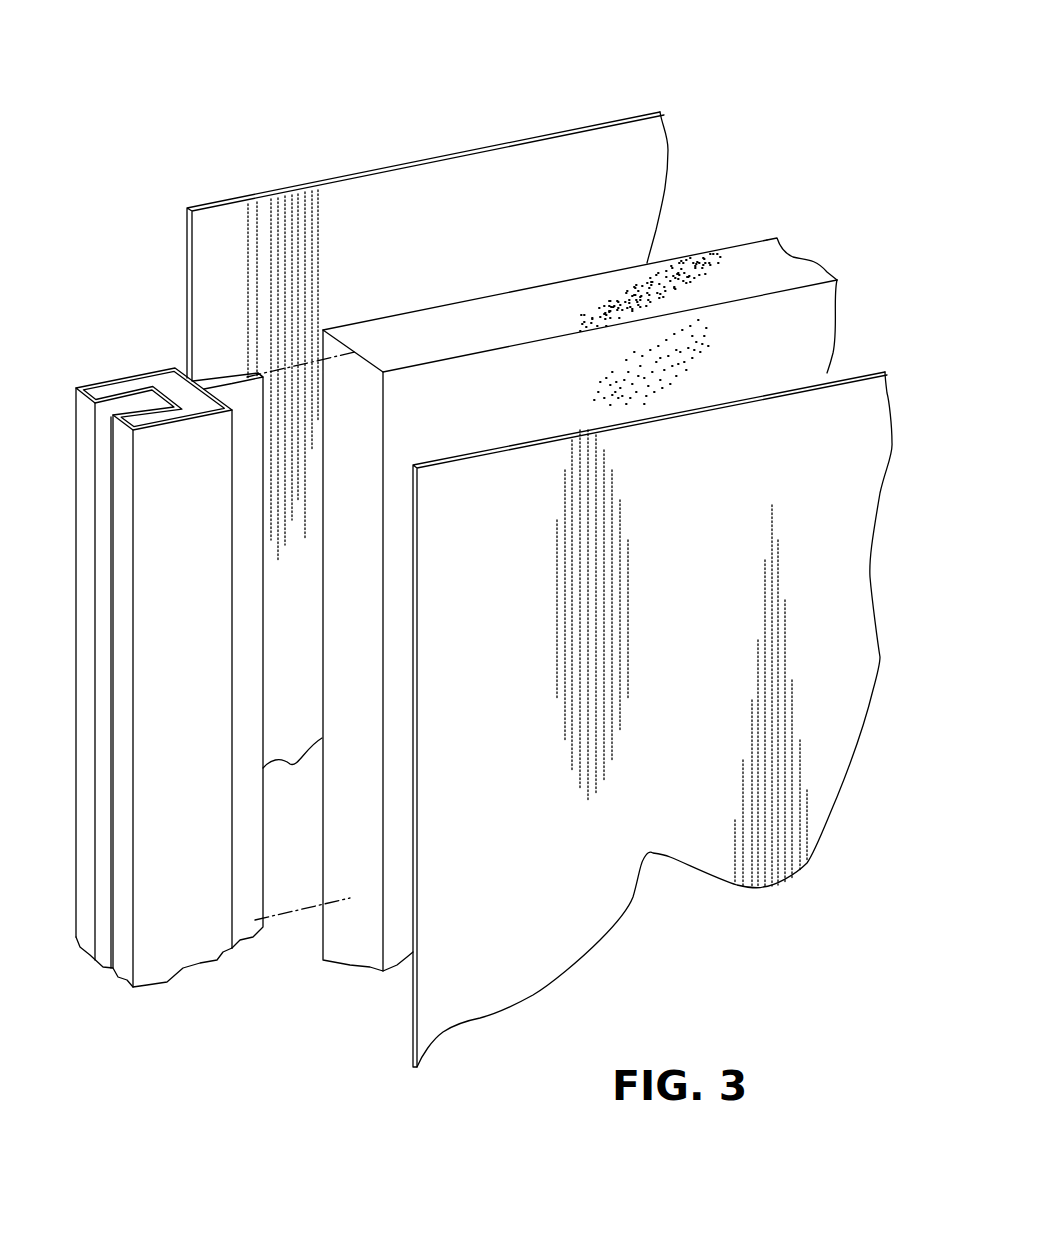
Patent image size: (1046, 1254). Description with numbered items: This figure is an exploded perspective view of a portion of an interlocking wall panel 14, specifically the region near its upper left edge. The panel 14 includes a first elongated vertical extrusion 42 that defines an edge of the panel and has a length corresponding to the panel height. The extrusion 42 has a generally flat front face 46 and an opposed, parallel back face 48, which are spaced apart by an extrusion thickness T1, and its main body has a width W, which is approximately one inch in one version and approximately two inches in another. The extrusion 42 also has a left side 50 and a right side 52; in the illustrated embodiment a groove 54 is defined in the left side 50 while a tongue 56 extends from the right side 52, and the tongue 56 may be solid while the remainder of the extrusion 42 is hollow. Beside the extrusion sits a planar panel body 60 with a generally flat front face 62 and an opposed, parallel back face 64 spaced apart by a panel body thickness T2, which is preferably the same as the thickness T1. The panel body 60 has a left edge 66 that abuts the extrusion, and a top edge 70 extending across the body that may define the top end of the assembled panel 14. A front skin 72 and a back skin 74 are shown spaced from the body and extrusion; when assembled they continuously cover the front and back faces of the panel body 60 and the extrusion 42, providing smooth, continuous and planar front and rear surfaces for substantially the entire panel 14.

The panel 14 is at (466, 112).
The first elongated vertical extrusion 42 is at (186, 659).
The front face 46 is at (194, 759).
The back face 48 is at (121, 376).
The left side 50 is at (83, 523).
The groove 54 is at (103, 462).
The right side 52 is at (193, 380).
The tongue 56 is at (247, 377).
The planar panel body 60 is at (580, 575).
The front face 62 is at (788, 358).
The back face 64 is at (695, 249).
The left edge 66 is at (364, 432).
The top edge 70 is at (532, 325).
The front skin 72 is at (843, 539).
The back skin 74 is at (669, 138).
The extrusion thickness T1 is at (200, 456).
The panel body thickness T2 is at (416, 311).
The width W is at (231, 589).